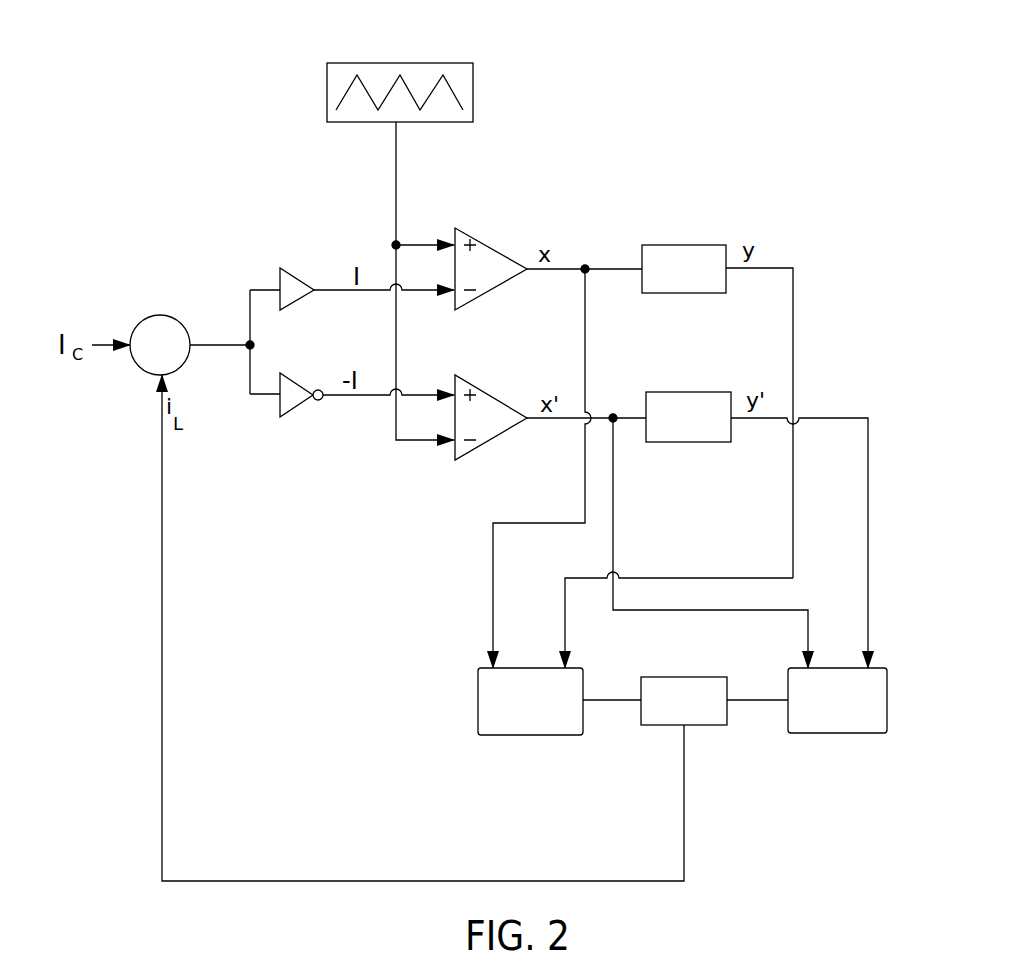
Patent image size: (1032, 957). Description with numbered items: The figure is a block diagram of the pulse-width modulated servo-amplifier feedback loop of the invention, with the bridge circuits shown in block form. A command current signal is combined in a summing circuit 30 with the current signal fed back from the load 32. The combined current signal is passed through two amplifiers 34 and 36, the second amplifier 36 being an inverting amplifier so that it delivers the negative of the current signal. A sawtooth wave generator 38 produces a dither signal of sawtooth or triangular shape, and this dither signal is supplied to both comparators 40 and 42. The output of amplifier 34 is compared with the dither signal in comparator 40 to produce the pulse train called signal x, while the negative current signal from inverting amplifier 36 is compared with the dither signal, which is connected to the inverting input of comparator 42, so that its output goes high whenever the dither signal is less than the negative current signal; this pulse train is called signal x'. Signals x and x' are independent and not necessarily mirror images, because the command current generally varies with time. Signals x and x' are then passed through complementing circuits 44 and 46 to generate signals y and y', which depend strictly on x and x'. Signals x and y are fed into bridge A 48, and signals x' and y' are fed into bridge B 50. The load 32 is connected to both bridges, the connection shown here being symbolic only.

The summing circuit 30 is at (150, 320).
The load 32 is at (698, 720).
The amplifier 34 is at (292, 288).
The inverting amplifier 36 is at (290, 393).
The sawtooth wave generator 38 is at (463, 93).
The comparator 40 is at (487, 255).
The comparator 42 is at (487, 405).
The complementing circuit 44 is at (700, 250).
The complementing circuit 46 is at (700, 398).
The bridge A 48 is at (503, 727).
The bridge B 50 is at (853, 727).